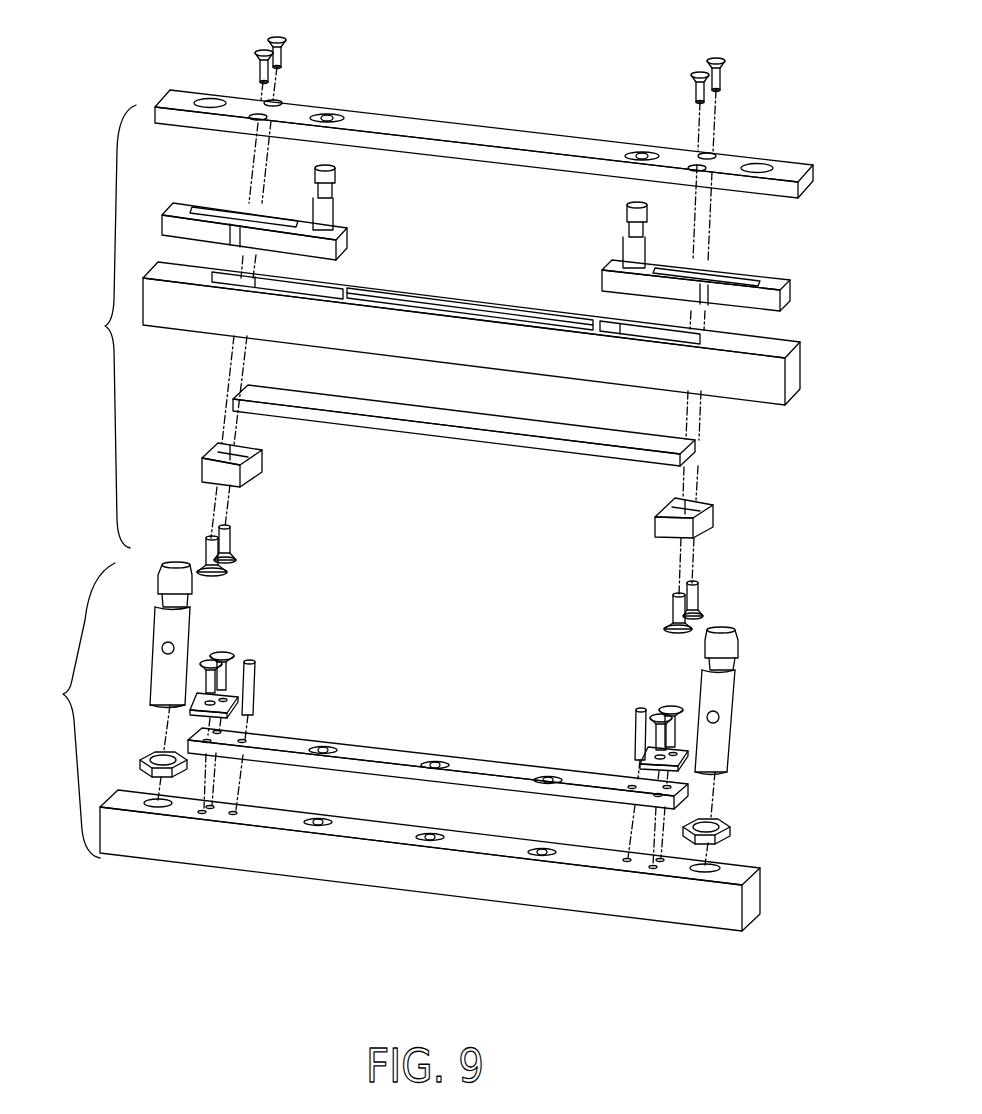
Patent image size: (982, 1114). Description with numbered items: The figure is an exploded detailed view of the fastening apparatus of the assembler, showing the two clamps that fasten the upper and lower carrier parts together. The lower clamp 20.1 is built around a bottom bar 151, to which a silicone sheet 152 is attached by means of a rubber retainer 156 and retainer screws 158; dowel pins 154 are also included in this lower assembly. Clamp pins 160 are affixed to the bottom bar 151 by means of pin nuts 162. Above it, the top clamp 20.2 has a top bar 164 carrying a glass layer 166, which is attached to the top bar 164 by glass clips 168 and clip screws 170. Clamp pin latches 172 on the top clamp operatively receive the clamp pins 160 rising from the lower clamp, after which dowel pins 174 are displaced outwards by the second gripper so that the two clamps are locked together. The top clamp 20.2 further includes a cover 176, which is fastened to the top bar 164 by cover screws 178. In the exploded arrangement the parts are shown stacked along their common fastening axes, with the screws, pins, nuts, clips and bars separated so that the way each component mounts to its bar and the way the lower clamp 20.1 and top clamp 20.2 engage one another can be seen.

The bottom bar 151 is at (752, 922).
The silicone sheet 152 is at (688, 787).
The dowel pins 154 is at (640, 727).
The rubber retainer 156 is at (190, 710).
The retainer screws 158 is at (678, 730).
The clamp pins 160 is at (720, 717).
The pin nuts 162 is at (730, 828).
The top bar 164 is at (800, 353).
The glass layer 166 is at (690, 438).
The glass clips 168 is at (712, 508).
The clip screws 170 is at (208, 550).
The clamp pin latches 172 is at (790, 287).
The dowel pins 174 is at (632, 250).
The cover 176 is at (795, 174).
The cover screws 178 is at (258, 46).
The lower clamp 20.1 is at (60, 710).
The top clamp 20.2 is at (89, 326).